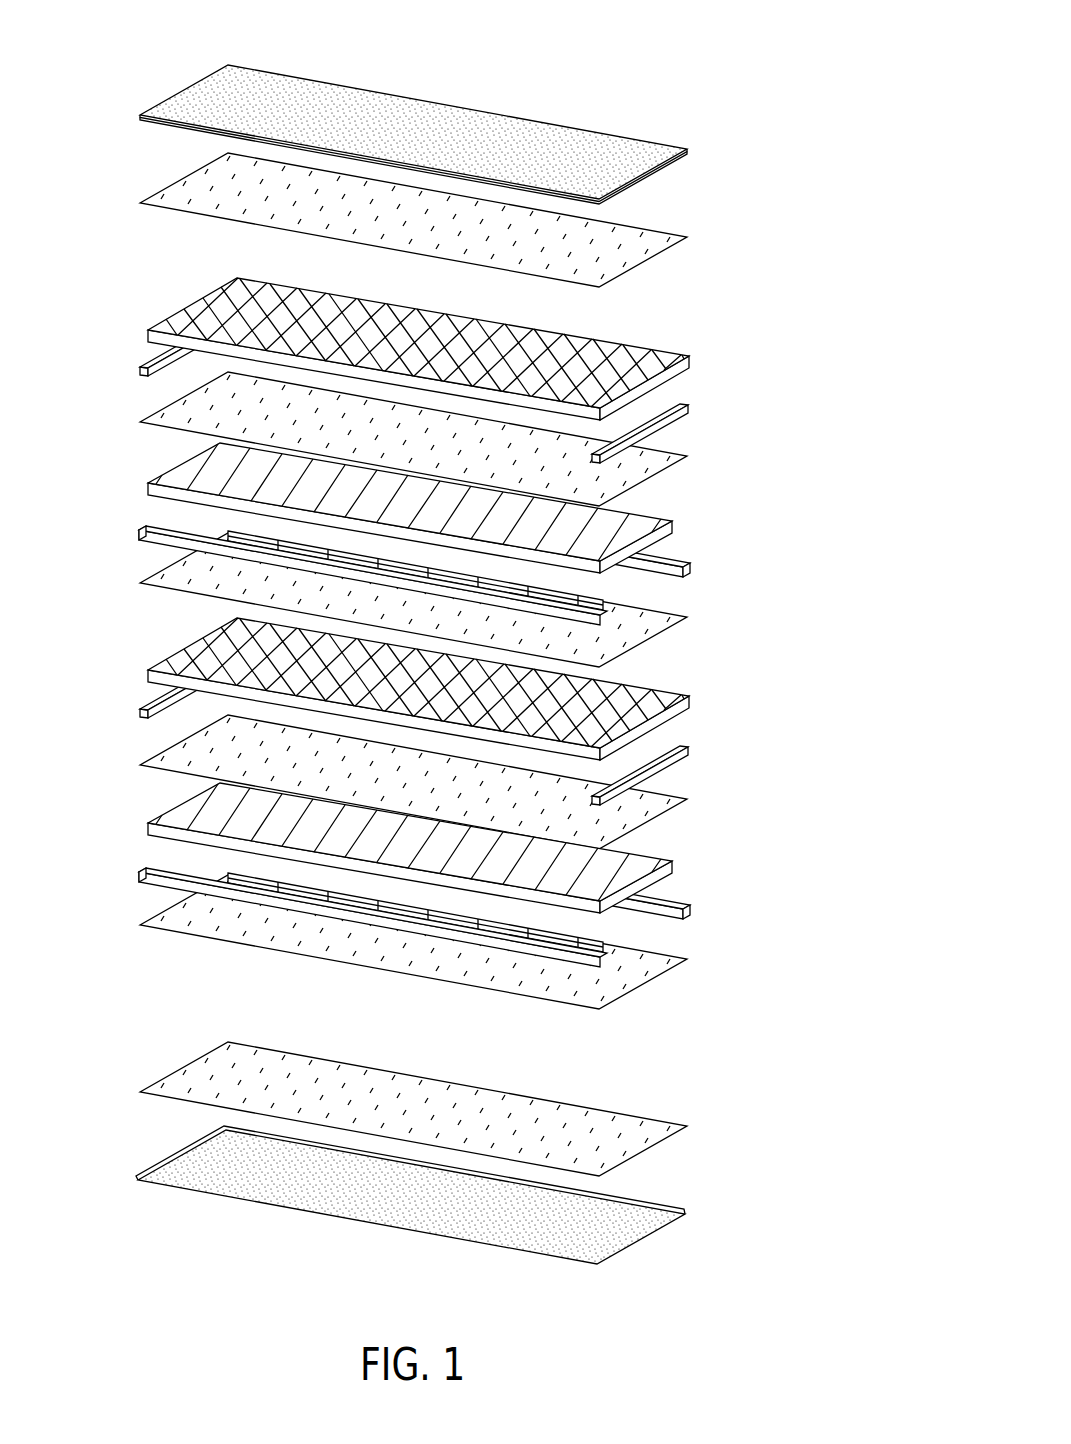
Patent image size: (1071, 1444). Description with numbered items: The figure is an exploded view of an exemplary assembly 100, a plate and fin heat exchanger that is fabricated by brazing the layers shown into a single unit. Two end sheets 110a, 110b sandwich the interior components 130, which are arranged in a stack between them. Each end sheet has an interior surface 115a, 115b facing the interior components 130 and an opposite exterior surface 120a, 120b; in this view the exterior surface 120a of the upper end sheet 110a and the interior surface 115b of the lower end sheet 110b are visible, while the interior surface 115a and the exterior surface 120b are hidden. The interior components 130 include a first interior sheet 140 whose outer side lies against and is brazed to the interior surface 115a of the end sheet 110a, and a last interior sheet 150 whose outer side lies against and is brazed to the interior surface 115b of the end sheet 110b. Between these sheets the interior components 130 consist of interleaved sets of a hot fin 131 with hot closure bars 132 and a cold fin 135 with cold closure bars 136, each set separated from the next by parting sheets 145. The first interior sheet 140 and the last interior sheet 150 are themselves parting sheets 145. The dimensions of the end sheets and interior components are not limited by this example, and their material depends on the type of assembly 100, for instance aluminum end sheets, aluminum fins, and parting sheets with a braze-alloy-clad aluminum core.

The assembly 100 is at (703, 75).
The end sheet 110a is at (190, 84).
The end sheet 110b is at (178, 1192).
The interior surface 115a is at (193, 137).
The interior surface 115b is at (660, 1218).
The exterior surface 120a is at (443, 120).
The exterior surface 120b is at (346, 1238).
The interior components 130 is at (475, 649).
The hot fin 131 is at (655, 347).
The hot closure bars 132 is at (672, 438).
The cold fin 135 is at (653, 862).
The cold closure bars 136 is at (670, 923).
The first interior sheet 140 is at (345, 228).
The parting sheets 145 is at (129, 207).
The last interior sheet 150 is at (432, 1095).